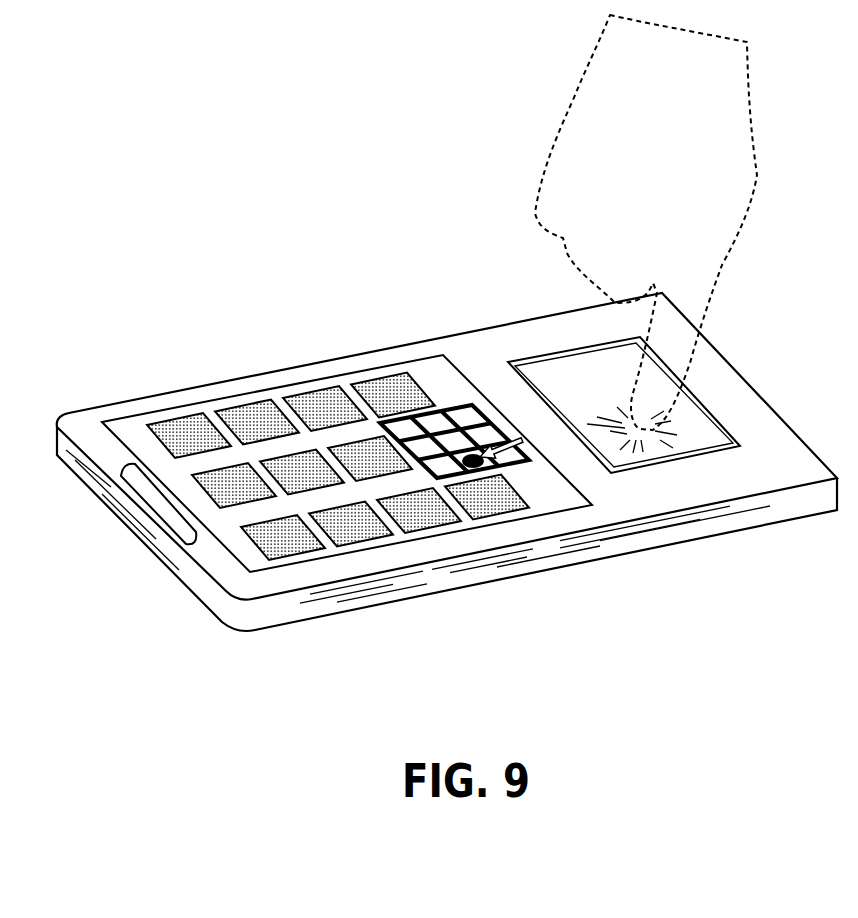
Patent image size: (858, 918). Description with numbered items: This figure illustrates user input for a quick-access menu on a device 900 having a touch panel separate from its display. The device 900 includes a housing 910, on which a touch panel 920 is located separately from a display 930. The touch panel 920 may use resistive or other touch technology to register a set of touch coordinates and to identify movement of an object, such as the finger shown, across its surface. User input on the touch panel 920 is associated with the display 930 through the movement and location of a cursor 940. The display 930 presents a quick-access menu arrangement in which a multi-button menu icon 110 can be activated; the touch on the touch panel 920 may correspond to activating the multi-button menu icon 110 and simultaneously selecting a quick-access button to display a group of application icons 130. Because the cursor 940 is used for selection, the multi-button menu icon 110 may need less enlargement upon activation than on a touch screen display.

The device 900 is at (178, 310).
The housing 910 is at (712, 342).
The touch panel 920 is at (704, 407).
The display 930 is at (330, 380).
The multi-button menu icon 110 is at (458, 406).
The application icon 130 is at (452, 524).
The cursor 940 is at (526, 444).